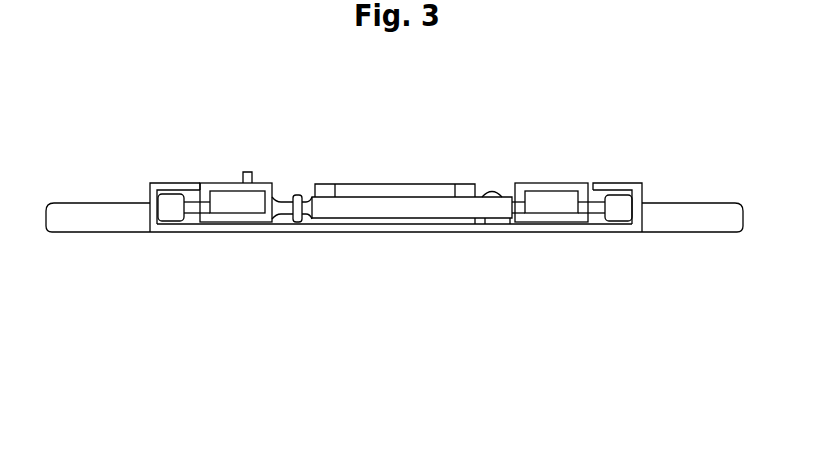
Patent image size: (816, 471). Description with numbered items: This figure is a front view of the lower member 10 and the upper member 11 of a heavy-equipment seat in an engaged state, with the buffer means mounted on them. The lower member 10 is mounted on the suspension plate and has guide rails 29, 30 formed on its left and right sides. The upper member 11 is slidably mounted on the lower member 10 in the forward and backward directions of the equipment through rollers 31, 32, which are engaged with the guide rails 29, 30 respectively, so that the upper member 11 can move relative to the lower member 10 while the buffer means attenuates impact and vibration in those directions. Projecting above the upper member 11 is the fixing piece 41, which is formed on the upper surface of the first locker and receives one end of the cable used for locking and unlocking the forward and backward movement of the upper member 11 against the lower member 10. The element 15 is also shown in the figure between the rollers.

The lower member 10 is at (488, 244).
The upper member 11 is at (298, 178).
The slider body 15 is at (388, 208).
The guide rail 29 is at (178, 183).
The guide rail 30 is at (617, 183).
The roller 31 is at (178, 216).
The roller 32 is at (615, 216).
The fixing piece 41 is at (249, 172).